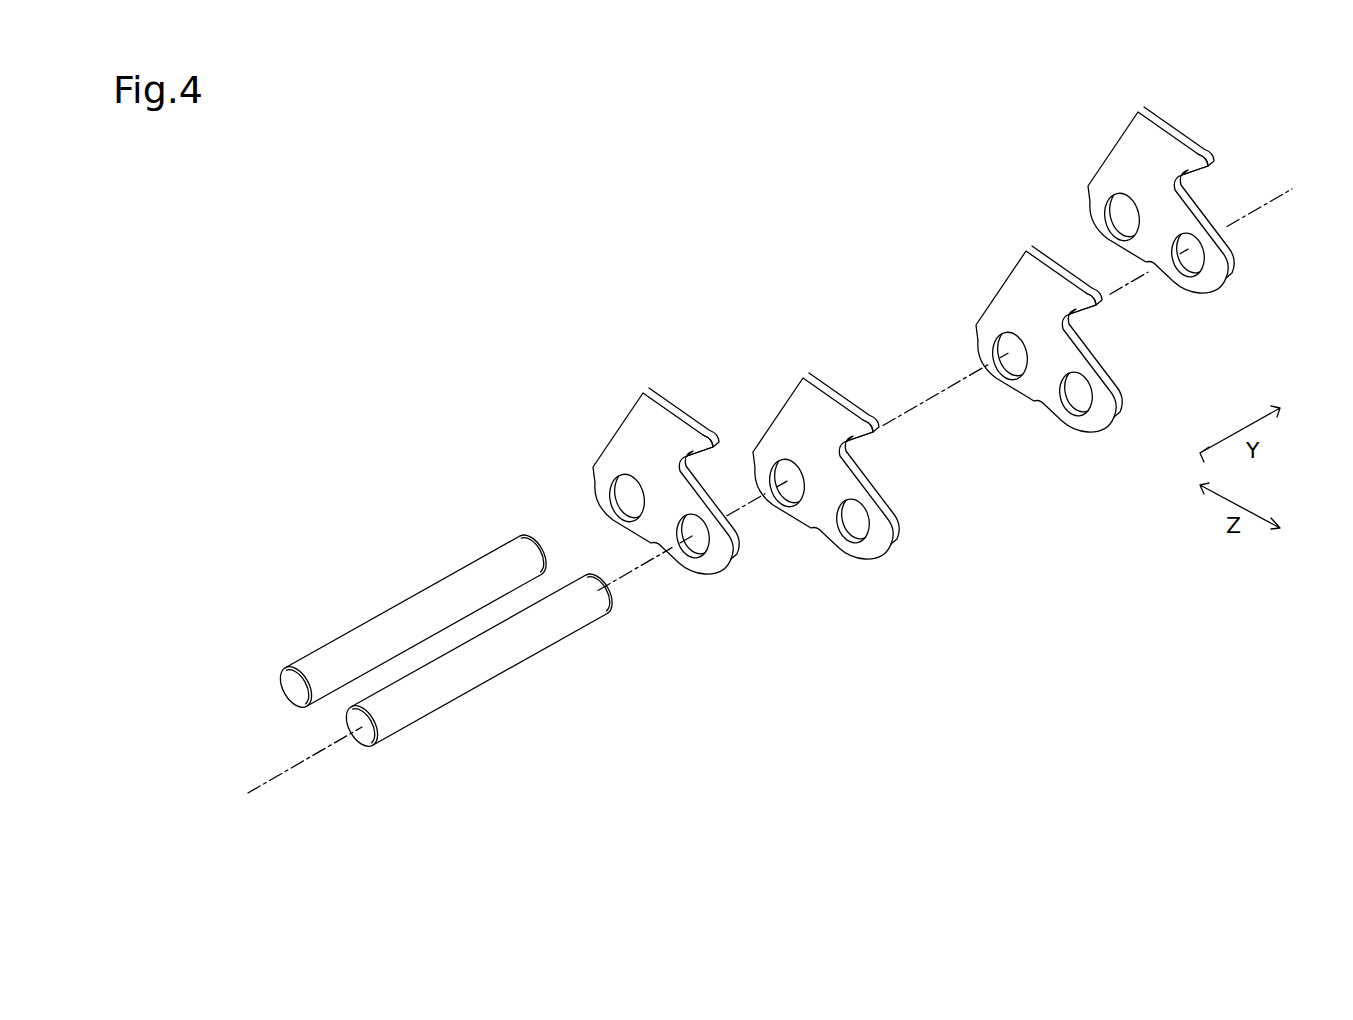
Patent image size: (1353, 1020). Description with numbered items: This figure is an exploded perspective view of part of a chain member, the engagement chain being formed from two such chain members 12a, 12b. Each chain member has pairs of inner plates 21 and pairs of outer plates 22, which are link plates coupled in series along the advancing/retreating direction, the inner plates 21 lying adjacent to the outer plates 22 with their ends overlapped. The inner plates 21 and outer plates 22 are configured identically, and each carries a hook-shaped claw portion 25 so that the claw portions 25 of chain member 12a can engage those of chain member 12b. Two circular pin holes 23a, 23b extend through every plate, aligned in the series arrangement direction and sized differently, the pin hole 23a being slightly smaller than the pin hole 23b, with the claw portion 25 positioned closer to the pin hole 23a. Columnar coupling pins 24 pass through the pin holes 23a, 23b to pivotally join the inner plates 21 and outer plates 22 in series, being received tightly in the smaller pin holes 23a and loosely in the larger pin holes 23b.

The chain member 12a is at (659, 258).
The chain member 12b is at (770, 445).
The inner plate 21 is at (803, 378).
The outer plate 22 is at (643, 393).
The pin hole 23a is at (695, 549).
The pin hole 23b is at (612, 500).
The coupling pin 24 is at (400, 606).
The claw portion 25 is at (704, 446).